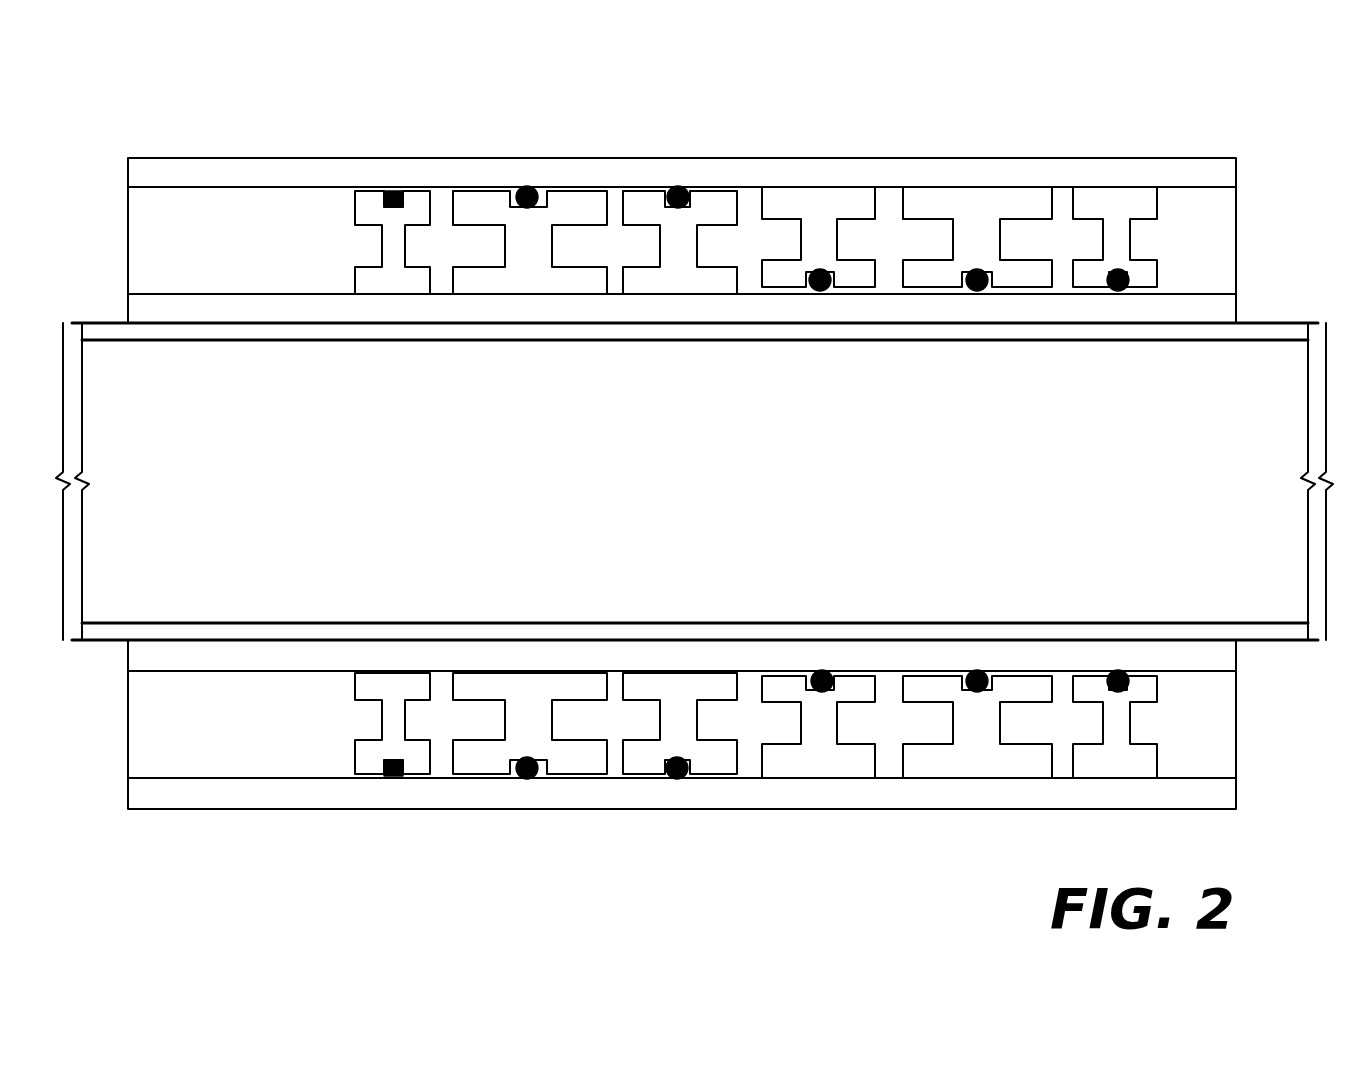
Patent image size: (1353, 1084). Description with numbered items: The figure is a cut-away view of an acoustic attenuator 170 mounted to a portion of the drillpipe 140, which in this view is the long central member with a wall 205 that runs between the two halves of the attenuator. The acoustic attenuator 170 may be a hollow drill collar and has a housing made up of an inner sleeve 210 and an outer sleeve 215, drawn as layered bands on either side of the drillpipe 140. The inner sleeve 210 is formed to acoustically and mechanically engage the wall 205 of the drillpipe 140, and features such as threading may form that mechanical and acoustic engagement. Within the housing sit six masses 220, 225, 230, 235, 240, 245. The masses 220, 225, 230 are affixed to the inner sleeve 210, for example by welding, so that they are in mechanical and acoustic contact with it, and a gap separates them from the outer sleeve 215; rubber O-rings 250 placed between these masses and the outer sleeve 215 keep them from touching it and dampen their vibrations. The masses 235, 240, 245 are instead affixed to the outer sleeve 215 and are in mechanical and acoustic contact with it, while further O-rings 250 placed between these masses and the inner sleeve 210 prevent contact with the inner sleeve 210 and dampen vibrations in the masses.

The drillpipe 140 is at (1252, 297).
The acoustic attenuator 170 is at (188, 104).
The wall of the drillpipe 205 is at (1282, 328).
The inner sleeve 210 is at (160, 313).
The outer sleeve 215 is at (162, 172).
The mass 220 is at (392, 282).
The mass 225 is at (537, 283).
The mass 230 is at (680, 283).
The mass 235 is at (820, 210).
The mass 240 is at (977, 195).
The mass 245 is at (1115, 198).
The rubber O-ring 250 is at (395, 190).